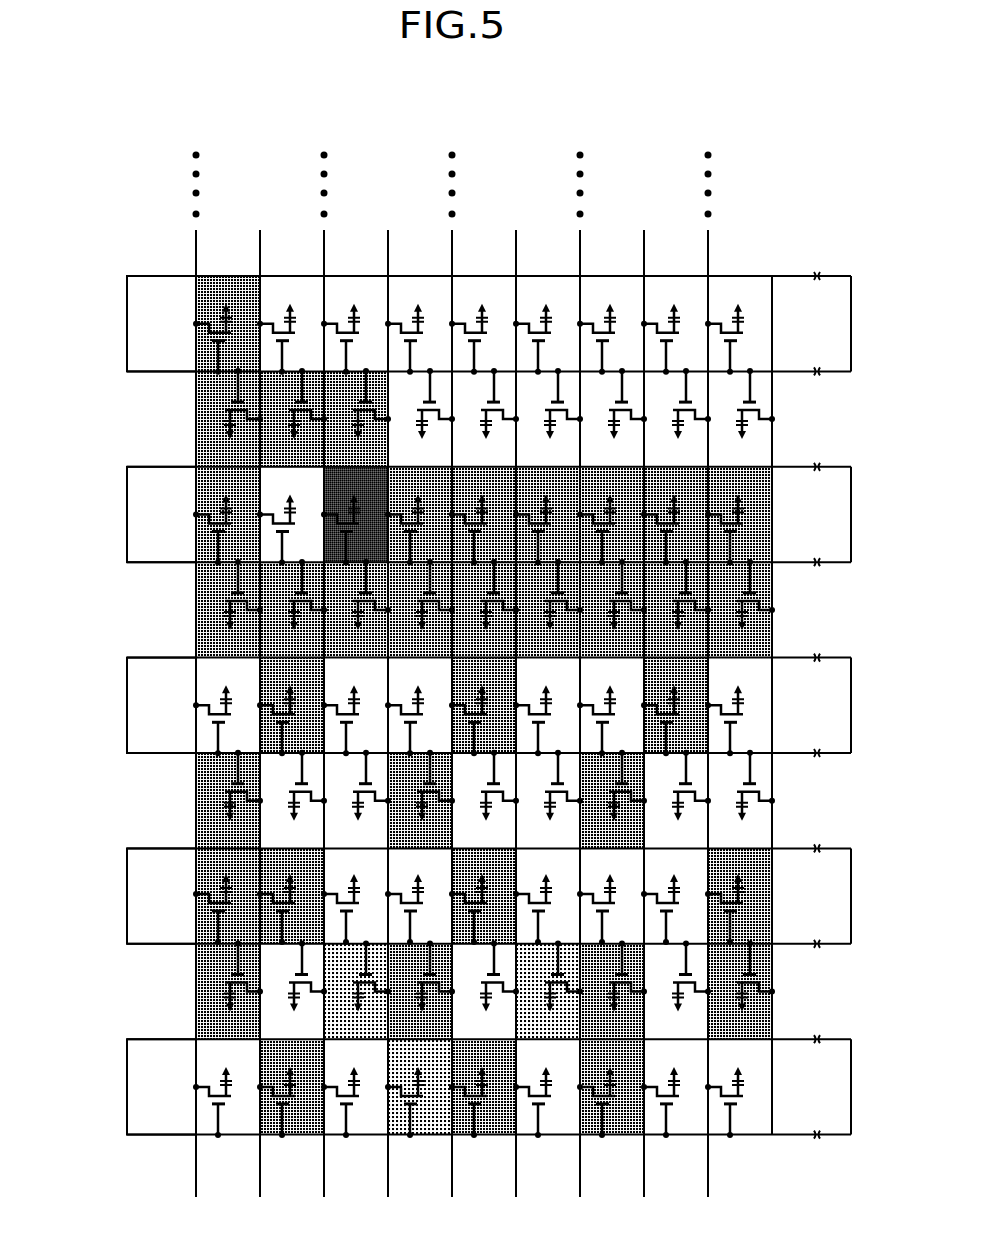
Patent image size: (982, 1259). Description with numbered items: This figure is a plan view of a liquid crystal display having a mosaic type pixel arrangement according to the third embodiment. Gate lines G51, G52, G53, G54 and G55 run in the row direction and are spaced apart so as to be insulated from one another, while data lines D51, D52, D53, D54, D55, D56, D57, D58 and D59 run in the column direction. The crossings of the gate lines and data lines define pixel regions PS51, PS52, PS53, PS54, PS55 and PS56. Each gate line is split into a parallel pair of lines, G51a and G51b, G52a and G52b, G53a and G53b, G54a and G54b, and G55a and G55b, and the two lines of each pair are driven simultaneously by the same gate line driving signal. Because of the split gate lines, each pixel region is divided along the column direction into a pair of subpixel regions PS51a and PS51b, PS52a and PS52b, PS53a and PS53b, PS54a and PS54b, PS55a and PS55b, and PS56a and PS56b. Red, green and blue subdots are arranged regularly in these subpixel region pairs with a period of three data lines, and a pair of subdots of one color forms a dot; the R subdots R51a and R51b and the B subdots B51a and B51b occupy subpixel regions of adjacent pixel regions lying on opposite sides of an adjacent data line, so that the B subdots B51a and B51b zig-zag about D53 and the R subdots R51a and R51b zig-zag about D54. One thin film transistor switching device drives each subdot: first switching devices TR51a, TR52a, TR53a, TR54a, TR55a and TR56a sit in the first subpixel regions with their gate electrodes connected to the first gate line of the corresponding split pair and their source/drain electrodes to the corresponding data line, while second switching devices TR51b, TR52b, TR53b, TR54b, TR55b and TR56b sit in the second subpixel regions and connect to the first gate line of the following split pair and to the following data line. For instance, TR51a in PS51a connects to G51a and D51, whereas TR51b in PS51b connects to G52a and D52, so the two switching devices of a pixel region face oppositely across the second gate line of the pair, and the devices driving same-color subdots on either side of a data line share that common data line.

The gate line G51 is at (127, 1087).
The gate line G52 is at (127, 894).
The gate line G53 is at (127, 705).
The gate line G54 is at (127, 514).
The gate line G55 is at (127, 324).
The first gate line G51a is at (160, 1131).
The second gate line G51b is at (160, 1036).
The first gate line G52a is at (160, 938).
The second gate line G52b is at (160, 846).
The first gate line G53a is at (160, 749).
The second gate line G53b is at (160, 655).
The first gate line G54a is at (160, 558).
The second gate line G54b is at (160, 464).
The first gate line G55a is at (160, 367).
The second gate line G55b is at (160, 272).
The data line D51 is at (197, 734).
The data line D52 is at (259, 734).
The data line D53 is at (325, 734).
The data line D54 is at (391, 734).
The data line D55 is at (453, 734).
The data line D56 is at (522, 734).
The data line D57 is at (584, 734).
The data line D58 is at (648, 734).
The data line D59 is at (712, 734).
The pixel region PS51 is at (223, 1138).
The pixel region PS52 is at (287, 1138).
The pixel region PS53 is at (351, 1138).
The pixel region PS54 is at (415, 1138).
The pixel region PS55 is at (479, 1138).
The pixel region PS56 is at (543, 1138).
The first subpixel region PS51a is at (228, 1054).
The second subpixel region PS51b is at (228, 961).
The first subpixel region PS52a is at (292, 1054).
The second subpixel region PS52b is at (292, 961).
The first subpixel region PS53a is at (356, 1054).
The second subpixel region PS53b is at (356, 961).
The first subpixel region PS54a is at (420, 1054).
The second subpixel region PS54b is at (420, 961).
The first subpixel region PS55a is at (484, 1054).
The second subpixel region PS55b is at (484, 961).
The first subpixel region PS56a is at (548, 1054).
The second subpixel region PS56b is at (548, 961).
The first switching device TR51a is at (224, 1102).
The second switching device TR51b is at (233, 989).
The first switching device TR52a is at (288, 1102).
The second switching device TR52b is at (297, 989).
The first switching device TR53a is at (352, 1102).
The second switching device TR53b is at (361, 989).
The first switching device TR54a is at (416, 1102).
The second switching device TR54b is at (425, 989).
The first switching device TR55a is at (480, 1102).
The second switching device TR55b is at (489, 989).
The first switching device TR56a is at (544, 1102).
The second switching device TR56b is at (553, 989).
The R subdot R51a is at (344, 1094).
The R subdot R51b is at (366, 987).
The B subdot B51a is at (472, 1094).
The B subdot B51b is at (430, 987).